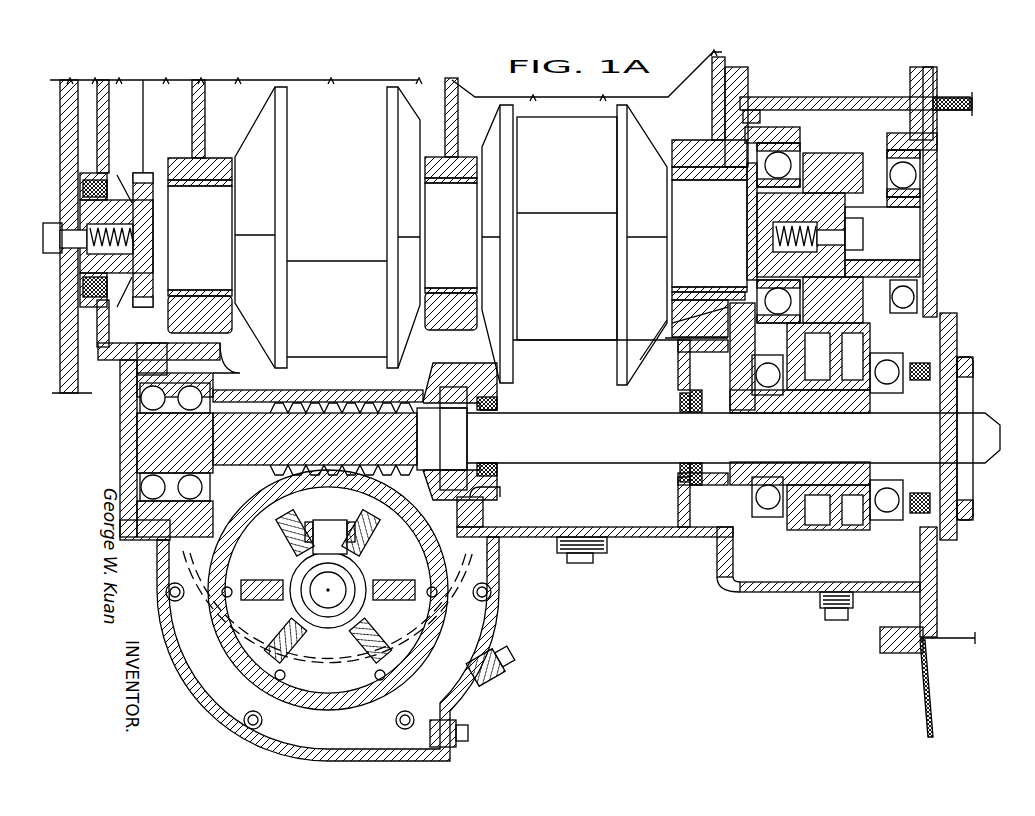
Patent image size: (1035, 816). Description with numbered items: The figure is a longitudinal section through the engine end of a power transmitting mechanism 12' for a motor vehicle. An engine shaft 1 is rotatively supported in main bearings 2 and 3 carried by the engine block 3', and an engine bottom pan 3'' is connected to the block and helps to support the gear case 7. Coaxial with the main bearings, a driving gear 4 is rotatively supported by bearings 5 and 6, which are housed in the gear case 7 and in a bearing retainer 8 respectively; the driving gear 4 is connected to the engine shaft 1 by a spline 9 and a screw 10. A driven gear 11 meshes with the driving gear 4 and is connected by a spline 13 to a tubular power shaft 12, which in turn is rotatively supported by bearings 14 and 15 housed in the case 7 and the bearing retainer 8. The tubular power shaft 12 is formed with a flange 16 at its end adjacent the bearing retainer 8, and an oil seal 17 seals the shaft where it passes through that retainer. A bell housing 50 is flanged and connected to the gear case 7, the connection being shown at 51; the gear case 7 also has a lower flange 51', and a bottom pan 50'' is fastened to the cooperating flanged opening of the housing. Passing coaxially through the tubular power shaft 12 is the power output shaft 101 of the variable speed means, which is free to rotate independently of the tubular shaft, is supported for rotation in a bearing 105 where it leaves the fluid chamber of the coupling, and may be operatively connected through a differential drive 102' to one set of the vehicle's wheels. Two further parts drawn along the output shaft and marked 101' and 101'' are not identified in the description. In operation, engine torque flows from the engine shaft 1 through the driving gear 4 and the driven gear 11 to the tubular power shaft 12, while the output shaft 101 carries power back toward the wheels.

The engine shaft 1 is at (208, 249).
The main bearing 2 is at (720, 178).
The main bearing 3 is at (457, 239).
The engine block 3' is at (453, 197).
The engine bottom pan 3'' is at (595, 534).
The driving gear 4 is at (827, 152).
The bearing 5 is at (800, 150).
The bearing 6 is at (887, 160).
The gear case 7 is at (820, 100).
The bearing retainer 8 is at (937, 293).
The spline 9 is at (770, 193).
The screw 10 is at (865, 233).
The driven gear 11 is at (827, 556).
The tubular power shaft 12 is at (828, 426).
The power transmitting mechanism 12' is at (764, 100).
The spline 13 is at (813, 398).
The bearing 14 is at (765, 520).
The bearing 15 is at (883, 522).
The flange 16 is at (943, 318).
The oil seal 17 is at (932, 363).
The bell housing 50 is at (967, 80).
The bottom pan 50'' is at (915, 684).
The flange connection 51 is at (937, 80).
The lower flange 51' is at (864, 644).
The power output shaft 101 is at (733, 438).
The wall 101' is at (710, 433).
The seal 101'' is at (664, 437).
The differential drive 102' is at (363, 615).
The bearing 105 is at (903, 408).